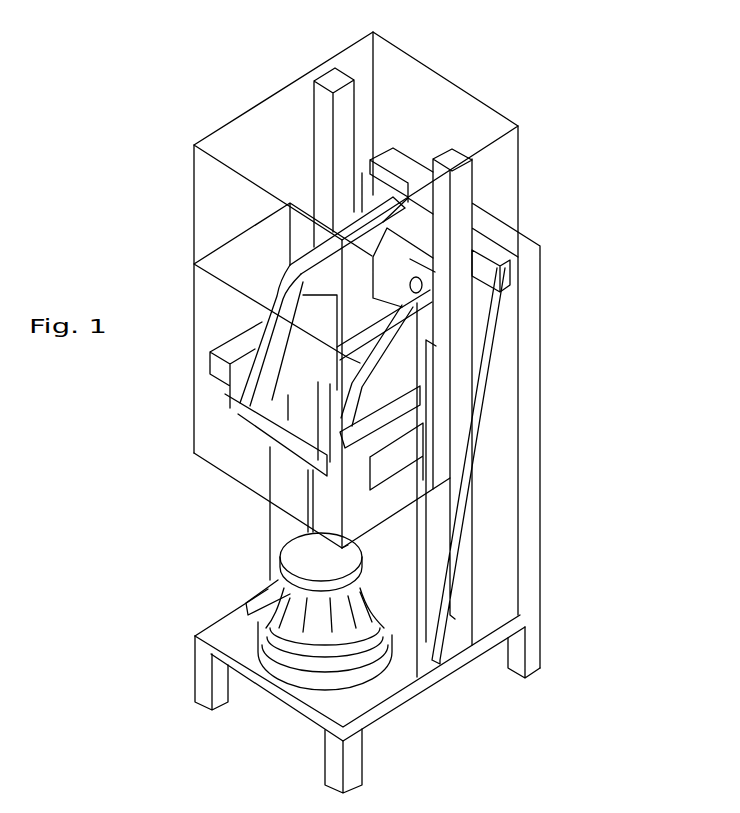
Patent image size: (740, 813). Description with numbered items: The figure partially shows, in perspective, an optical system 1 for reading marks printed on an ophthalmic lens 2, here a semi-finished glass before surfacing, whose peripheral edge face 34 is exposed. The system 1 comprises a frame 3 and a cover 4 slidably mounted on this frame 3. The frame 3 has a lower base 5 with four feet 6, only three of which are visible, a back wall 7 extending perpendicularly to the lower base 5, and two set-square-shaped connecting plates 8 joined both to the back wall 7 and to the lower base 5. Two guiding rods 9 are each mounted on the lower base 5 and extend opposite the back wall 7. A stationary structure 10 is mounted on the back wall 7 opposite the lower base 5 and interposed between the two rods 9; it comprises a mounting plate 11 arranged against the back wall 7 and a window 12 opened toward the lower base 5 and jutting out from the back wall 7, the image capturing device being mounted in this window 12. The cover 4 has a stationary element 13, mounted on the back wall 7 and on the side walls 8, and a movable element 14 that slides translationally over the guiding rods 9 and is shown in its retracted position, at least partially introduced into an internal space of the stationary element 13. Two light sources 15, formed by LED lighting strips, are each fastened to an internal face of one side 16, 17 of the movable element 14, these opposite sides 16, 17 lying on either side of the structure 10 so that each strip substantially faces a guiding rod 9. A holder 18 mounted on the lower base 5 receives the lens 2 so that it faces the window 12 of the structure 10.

The optical system 1 is at (488, 44).
The ophthalmic lens 2 is at (321, 562).
The frame 3 is at (566, 505).
The cover 4 is at (185, 204).
The lower base 5 is at (404, 702).
The feet 6 is at (350, 763).
The back wall 7 is at (545, 372).
The connecting plates 8 is at (506, 467).
The guiding rods 9 is at (342, 72).
The stationary structure 10 is at (406, 377).
The mounting plate 11 is at (400, 287).
The window 12 is at (294, 428).
The stationary element 13 is at (430, 66).
The movable element 14 is at (214, 279).
The light sources 15 is at (218, 366).
The side 16 is at (214, 326).
The side 17 is at (366, 528).
The holder 18 is at (288, 663).
The edge face 34 is at (285, 573).